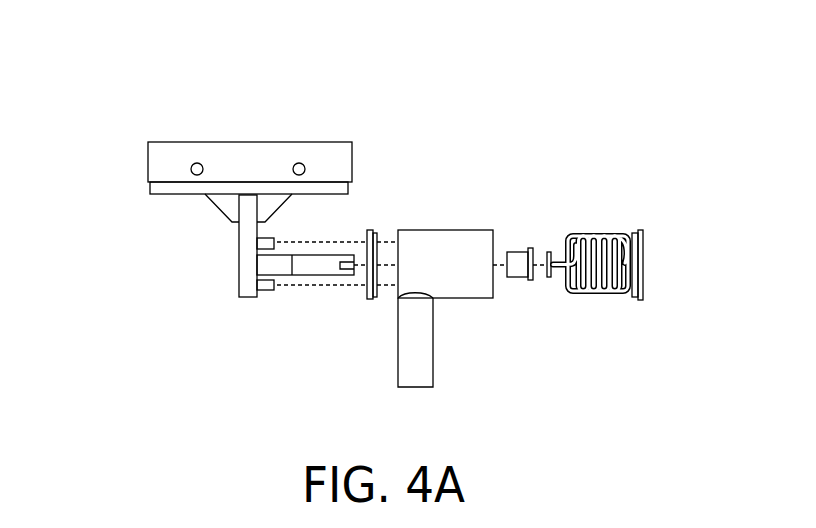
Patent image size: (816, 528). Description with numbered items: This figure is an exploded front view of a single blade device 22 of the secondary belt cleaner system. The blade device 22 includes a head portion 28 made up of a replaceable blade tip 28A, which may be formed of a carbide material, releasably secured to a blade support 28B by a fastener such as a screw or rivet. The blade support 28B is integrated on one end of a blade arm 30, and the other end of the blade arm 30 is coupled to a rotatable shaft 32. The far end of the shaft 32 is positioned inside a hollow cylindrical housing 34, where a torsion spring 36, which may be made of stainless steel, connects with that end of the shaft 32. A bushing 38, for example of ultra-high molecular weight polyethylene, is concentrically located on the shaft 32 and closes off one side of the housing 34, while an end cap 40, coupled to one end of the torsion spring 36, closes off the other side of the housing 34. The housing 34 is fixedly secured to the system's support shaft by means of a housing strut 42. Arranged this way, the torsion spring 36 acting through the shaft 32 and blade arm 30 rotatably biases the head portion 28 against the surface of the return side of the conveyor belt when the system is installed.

The blade device 22 is at (205, 312).
The head portion 28 is at (195, 93).
The replaceable blade tip 28A is at (233, 153).
The blade support 28B is at (173, 195).
The blade arm 30 is at (248, 258).
The rotatable shaft 32 is at (307, 268).
The hollow cylindrical housing 34 is at (462, 247).
The torsion spring 36 is at (610, 235).
The bushing 38 is at (373, 300).
The end cap 40 is at (643, 284).
The housing strut 42 is at (425, 353).